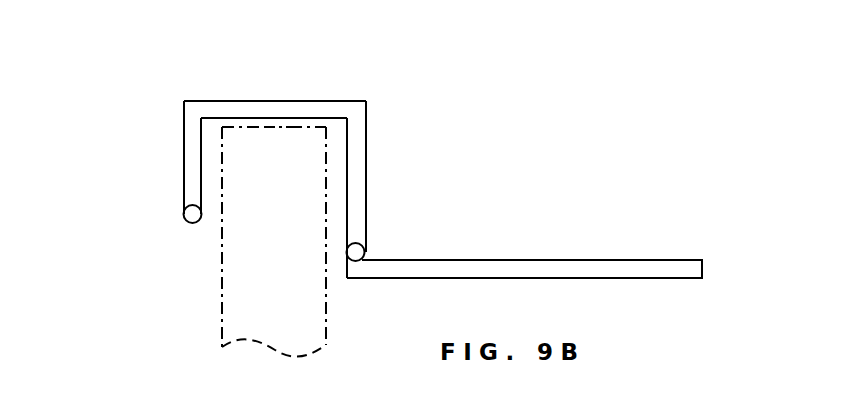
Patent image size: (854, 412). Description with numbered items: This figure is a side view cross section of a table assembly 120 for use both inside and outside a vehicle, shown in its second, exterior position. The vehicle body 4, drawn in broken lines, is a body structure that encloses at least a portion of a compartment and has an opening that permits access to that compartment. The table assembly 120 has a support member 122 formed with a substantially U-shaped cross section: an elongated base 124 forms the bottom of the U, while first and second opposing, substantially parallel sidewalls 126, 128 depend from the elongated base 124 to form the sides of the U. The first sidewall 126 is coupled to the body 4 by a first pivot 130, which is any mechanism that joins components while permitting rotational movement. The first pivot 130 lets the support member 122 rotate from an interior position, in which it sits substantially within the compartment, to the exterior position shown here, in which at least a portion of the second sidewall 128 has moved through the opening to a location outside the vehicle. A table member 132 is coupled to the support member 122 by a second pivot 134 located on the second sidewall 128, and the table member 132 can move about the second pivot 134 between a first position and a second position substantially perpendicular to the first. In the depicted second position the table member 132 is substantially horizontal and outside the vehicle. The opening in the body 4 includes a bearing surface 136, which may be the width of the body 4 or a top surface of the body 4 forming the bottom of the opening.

The vehicle body 4 is at (256, 282).
The table assembly 120 is at (504, 146).
The support member 122 is at (217, 84).
The elongated base 124 is at (273, 108).
The first sidewall 126 is at (193, 155).
The second sidewall 128 is at (355, 168).
The first pivot 130 is at (192, 214).
The table member 132 is at (620, 260).
The second pivot 134 is at (355, 252).
The bearing surface 136 is at (312, 127).